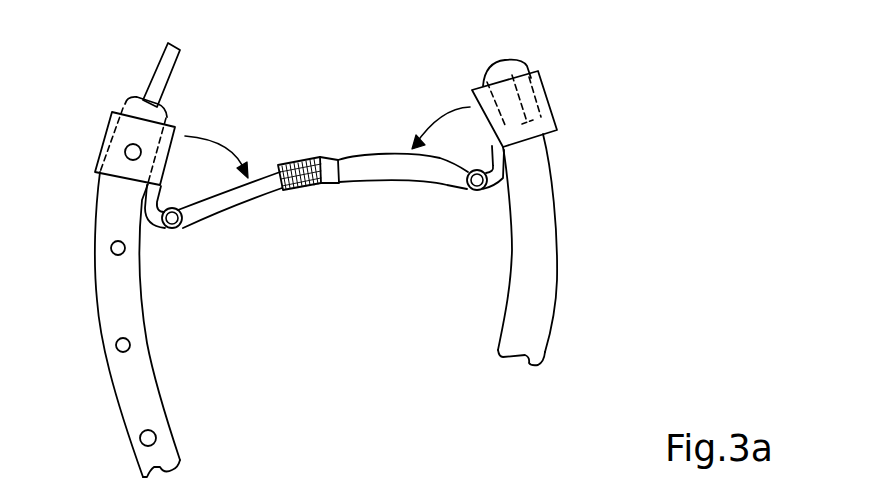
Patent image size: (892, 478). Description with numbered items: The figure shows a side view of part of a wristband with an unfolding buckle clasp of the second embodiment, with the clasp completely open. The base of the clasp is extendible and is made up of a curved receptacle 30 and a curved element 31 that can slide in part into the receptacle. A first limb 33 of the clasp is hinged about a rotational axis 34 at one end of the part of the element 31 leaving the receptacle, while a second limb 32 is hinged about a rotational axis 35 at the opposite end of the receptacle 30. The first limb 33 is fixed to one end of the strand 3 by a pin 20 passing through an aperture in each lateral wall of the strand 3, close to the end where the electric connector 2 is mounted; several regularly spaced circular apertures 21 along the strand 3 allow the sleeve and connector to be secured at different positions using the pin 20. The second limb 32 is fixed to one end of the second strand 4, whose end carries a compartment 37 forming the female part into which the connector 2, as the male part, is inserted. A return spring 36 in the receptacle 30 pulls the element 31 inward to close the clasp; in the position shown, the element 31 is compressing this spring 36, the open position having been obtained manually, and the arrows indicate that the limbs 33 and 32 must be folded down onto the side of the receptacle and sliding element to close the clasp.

The electric connector 2 is at (161, 68).
The strand 3 is at (115, 397).
The strand 4 is at (525, 288).
The pin 20 is at (127, 155).
The circular apertures 21 is at (111, 250).
The curved receptacle 30 is at (403, 177).
The curved element 31 is at (233, 193).
The second limb 32 is at (553, 118).
The first limb 33 is at (110, 128).
The rotational axis 34 is at (173, 222).
The rotational axis 35 is at (480, 192).
The return spring 36 is at (300, 185).
The compartment 37 is at (508, 63).